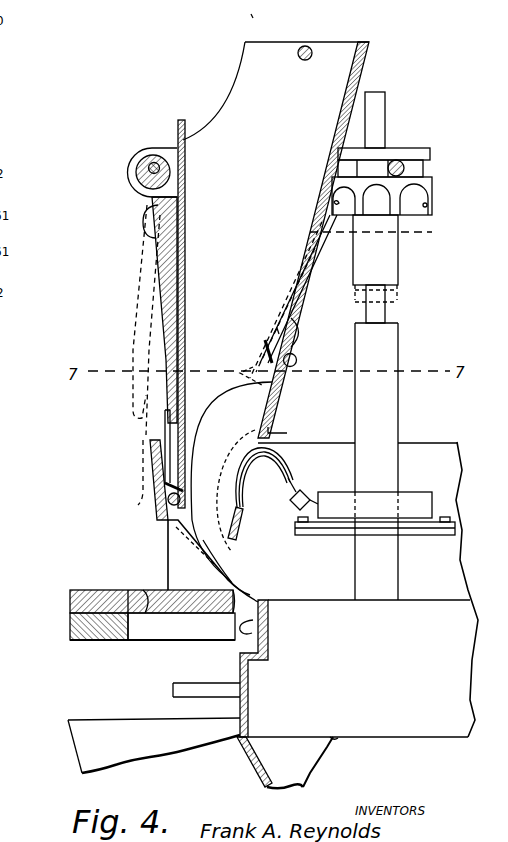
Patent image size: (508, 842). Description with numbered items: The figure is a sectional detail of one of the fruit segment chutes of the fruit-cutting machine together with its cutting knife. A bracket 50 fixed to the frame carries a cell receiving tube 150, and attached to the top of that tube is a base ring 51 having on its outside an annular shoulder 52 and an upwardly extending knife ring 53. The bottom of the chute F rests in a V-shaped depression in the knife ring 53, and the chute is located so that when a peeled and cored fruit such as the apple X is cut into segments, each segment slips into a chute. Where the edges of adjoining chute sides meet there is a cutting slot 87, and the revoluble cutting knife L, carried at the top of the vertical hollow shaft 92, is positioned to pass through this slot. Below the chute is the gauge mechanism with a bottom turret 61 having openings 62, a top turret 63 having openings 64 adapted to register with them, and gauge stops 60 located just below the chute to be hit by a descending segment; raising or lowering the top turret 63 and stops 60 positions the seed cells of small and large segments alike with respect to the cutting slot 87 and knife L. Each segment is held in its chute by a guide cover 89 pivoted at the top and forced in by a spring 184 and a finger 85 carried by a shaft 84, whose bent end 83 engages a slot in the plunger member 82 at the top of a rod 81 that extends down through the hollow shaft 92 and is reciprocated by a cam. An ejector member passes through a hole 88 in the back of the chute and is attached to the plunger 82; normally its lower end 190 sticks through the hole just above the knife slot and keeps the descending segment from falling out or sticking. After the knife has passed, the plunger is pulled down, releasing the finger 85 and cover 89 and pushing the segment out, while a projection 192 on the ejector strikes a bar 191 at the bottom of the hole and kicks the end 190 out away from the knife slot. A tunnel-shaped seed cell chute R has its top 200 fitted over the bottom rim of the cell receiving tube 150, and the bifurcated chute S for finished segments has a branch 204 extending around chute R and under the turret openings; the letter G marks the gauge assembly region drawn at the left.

The bracket 50 is at (178, 690).
The base ring 51 is at (267, 618).
The annular shoulder 52 is at (250, 577).
The knife ring 53 is at (150, 488).
The gauge stop 60 is at (168, 560).
The bottom turret 61 is at (70, 638).
The opening 62 is at (152, 626).
The top turret 63 is at (70, 594).
The opening 64 is at (135, 592).
The rod 81 is at (380, 304).
The plunger member 82 is at (432, 180).
The bent end of shaft 83 is at (400, 162).
The shaft 84 is at (160, 168).
The finger 85 is at (165, 318).
The cutting slot 87 is at (255, 533).
The hole 88 is at (312, 238).
The guide cover 89 is at (180, 278).
The hollow shaft 92 is at (390, 350).
The cell receiving tube 150 is at (273, 727).
The spring 184 is at (137, 203).
The lower end of ejector 190 is at (267, 360).
The bar 191 is at (297, 359).
The projection 192 is at (302, 317).
The top of seed cell chute 200 is at (240, 770).
The branch 204 is at (68, 746).
The chute F is at (276, 240).
The apple X is at (323, 400).
The cutting knife L is at (288, 481).
The guide assembly G is at (70, 628).
The bifurcated chute S is at (154, 745).
The seed cell chute R is at (312, 778).